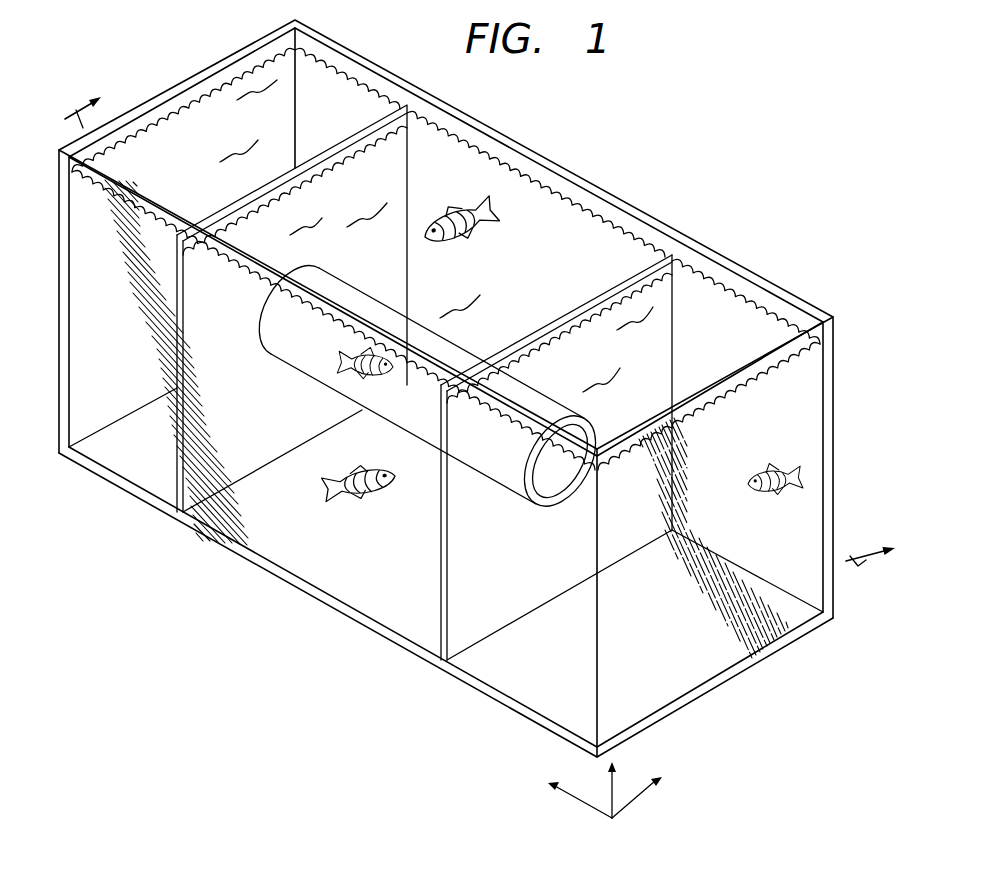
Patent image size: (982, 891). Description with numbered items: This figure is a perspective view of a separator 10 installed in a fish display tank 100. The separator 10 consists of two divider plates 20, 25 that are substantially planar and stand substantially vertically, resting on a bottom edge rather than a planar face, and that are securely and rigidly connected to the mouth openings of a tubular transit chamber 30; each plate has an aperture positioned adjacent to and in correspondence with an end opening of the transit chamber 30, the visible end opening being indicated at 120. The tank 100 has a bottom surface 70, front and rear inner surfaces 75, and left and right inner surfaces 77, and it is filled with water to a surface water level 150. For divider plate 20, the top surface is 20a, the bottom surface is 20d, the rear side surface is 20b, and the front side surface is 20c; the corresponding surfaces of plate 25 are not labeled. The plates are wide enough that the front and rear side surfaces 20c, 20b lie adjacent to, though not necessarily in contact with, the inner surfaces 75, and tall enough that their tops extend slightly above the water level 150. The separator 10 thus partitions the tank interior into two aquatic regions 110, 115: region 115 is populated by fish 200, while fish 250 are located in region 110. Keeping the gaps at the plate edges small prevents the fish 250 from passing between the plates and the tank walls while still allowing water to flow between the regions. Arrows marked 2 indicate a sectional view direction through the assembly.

The separator 10 is at (505, 257).
The divider plate 20 is at (615, 300).
The top surface 20a is at (547, 327).
The rear side surface 20b is at (672, 322).
The front side surface 20c is at (442, 582).
The bottom surface 20d is at (513, 623).
The divider plate 25 is at (343, 150).
The tubular transit chamber 30 is at (358, 297).
The bottom surface 70 is at (660, 698).
The front and rear inner surfaces 75 is at (362, 75).
The left and right inner surfaces 77 is at (160, 107).
The fish display tank 100 is at (757, 272).
The aquatic region 110 is at (223, 85).
The aquatic region 115 is at (513, 167).
The tube opening 120 is at (553, 486).
The surface water level 150 is at (627, 209).
The fish 200 is at (448, 217).
The fish 250 is at (338, 361).
The section line 2- 2 is at (490, 320).